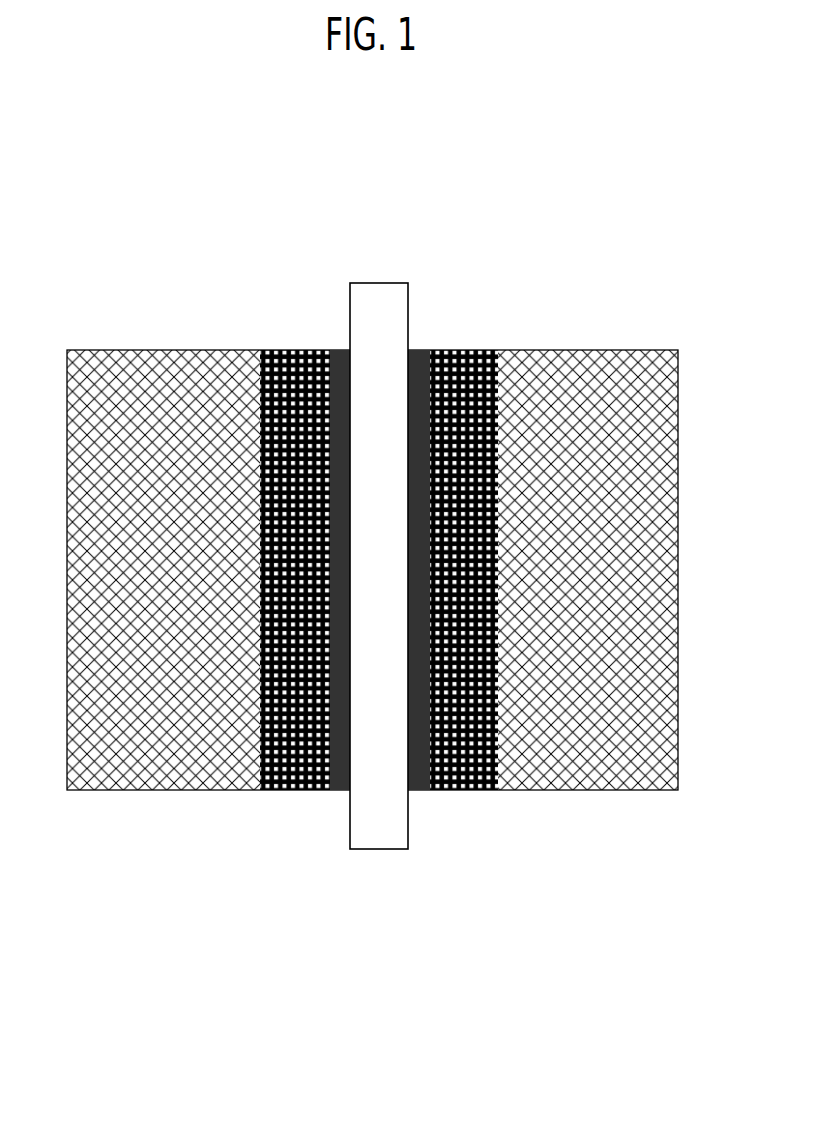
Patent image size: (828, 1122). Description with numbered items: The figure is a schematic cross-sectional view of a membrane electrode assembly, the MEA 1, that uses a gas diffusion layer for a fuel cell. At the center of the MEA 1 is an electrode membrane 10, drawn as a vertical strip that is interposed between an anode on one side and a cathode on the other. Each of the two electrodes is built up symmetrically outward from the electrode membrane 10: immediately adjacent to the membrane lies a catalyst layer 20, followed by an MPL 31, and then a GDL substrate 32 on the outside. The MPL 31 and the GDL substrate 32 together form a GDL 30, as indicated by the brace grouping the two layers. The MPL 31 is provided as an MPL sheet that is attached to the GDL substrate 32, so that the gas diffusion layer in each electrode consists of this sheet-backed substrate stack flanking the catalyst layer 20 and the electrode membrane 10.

The membrane electrode assembly 1 is at (385, 581).
The electrode membrane 10 is at (367, 836).
The catalyst layer 20 is at (333, 350).
The GDL 30 is at (360, 574).
The MPL 31 is at (258, 395).
The GDL substrate 32 is at (172, 763).